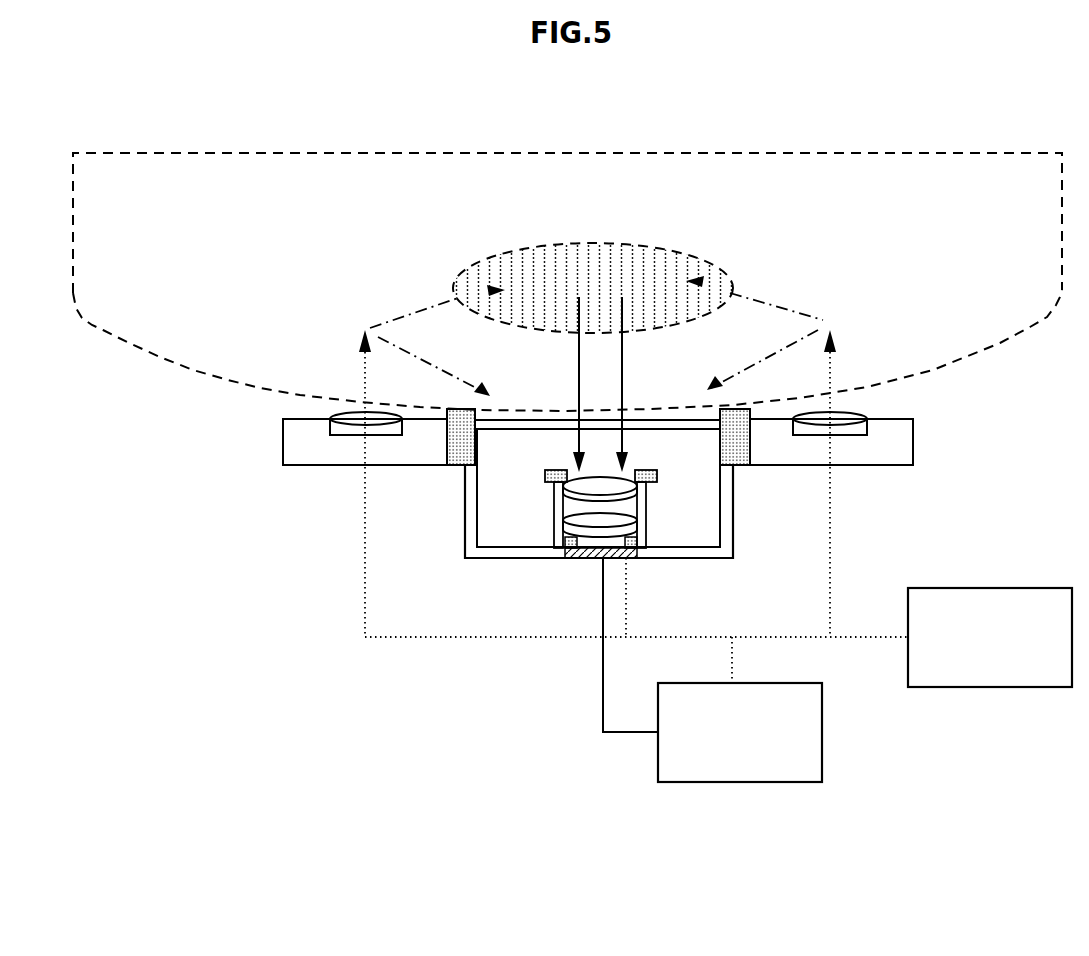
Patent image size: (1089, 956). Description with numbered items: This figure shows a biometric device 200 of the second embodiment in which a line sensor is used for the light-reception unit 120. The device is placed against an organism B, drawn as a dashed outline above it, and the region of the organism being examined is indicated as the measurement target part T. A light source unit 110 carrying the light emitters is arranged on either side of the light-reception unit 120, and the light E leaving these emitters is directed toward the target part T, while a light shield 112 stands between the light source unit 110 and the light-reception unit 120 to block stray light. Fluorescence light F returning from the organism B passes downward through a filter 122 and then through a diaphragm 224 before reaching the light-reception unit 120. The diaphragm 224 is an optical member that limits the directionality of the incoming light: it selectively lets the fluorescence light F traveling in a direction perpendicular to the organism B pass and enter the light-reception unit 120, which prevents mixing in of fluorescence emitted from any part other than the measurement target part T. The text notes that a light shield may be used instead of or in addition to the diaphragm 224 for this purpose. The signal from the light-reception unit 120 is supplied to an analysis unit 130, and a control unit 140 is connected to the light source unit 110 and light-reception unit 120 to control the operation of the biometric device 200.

The organism B is at (920, 152).
The target region T is at (707, 262).
The excitation light E is at (360, 358).
The fluorescence light F is at (578, 385).
The base board with light emitting units 110 is at (340, 466).
The light shield 112 is at (457, 466).
The light-reception unit 120 is at (563, 585).
The filter 122 is at (529, 423).
The diaphragm 224 is at (657, 483).
The analysis unit 130 is at (730, 781).
The control unit 140 is at (997, 688).
The biometric device 200 is at (462, 741).